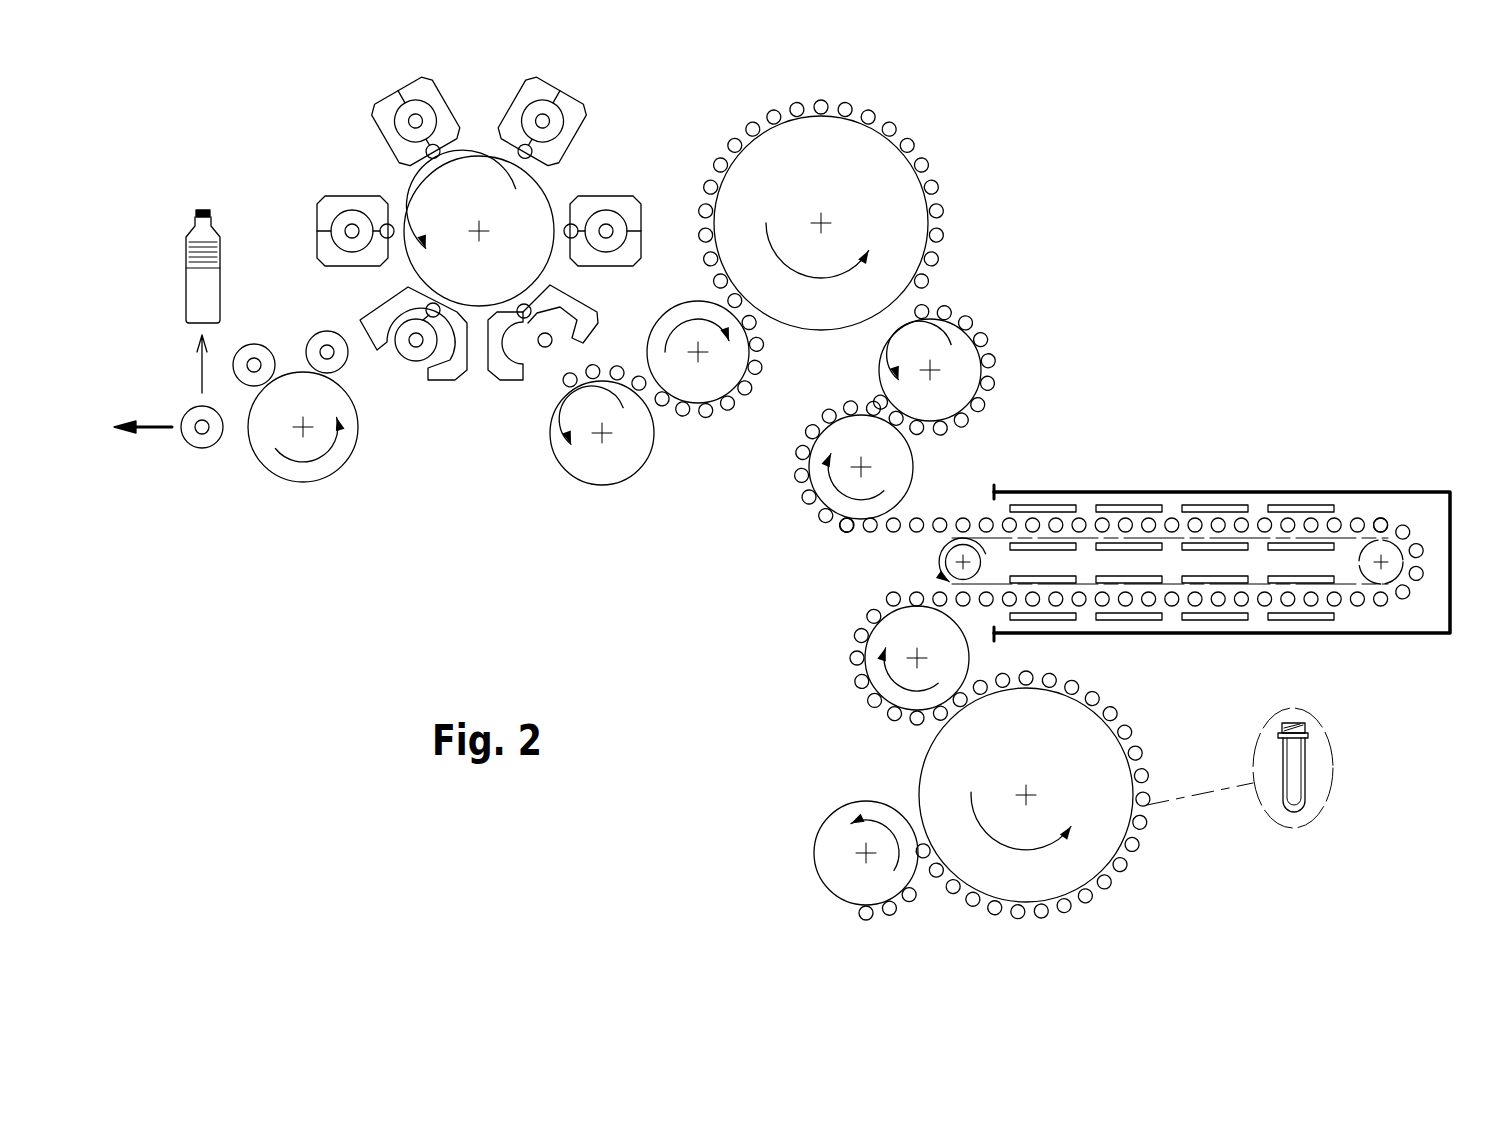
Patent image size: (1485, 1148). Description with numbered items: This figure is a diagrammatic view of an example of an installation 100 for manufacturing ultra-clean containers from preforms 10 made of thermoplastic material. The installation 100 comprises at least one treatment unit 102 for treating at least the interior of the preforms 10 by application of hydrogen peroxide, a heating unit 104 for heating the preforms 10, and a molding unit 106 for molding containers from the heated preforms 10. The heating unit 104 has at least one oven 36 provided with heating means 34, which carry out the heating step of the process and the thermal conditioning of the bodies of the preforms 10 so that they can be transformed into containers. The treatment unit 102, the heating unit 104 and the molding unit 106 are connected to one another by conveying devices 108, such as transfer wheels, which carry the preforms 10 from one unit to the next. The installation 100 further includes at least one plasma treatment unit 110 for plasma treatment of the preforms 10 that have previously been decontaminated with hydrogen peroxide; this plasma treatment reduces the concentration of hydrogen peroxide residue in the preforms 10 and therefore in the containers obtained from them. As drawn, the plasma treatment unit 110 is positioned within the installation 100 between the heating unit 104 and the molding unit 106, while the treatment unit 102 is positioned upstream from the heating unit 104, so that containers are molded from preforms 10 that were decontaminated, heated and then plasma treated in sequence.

The preform 10 is at (1380, 520).
The heating means 34 is at (1222, 510).
The oven 36 is at (1263, 632).
The installation 100 is at (1183, 295).
The treatment unit 102 is at (1104, 830).
The heating unit 104 is at (1157, 468).
The molding unit 106 is at (345, 155).
The conveying device 108 is at (588, 459).
The plasma treatment unit 110 is at (878, 190).